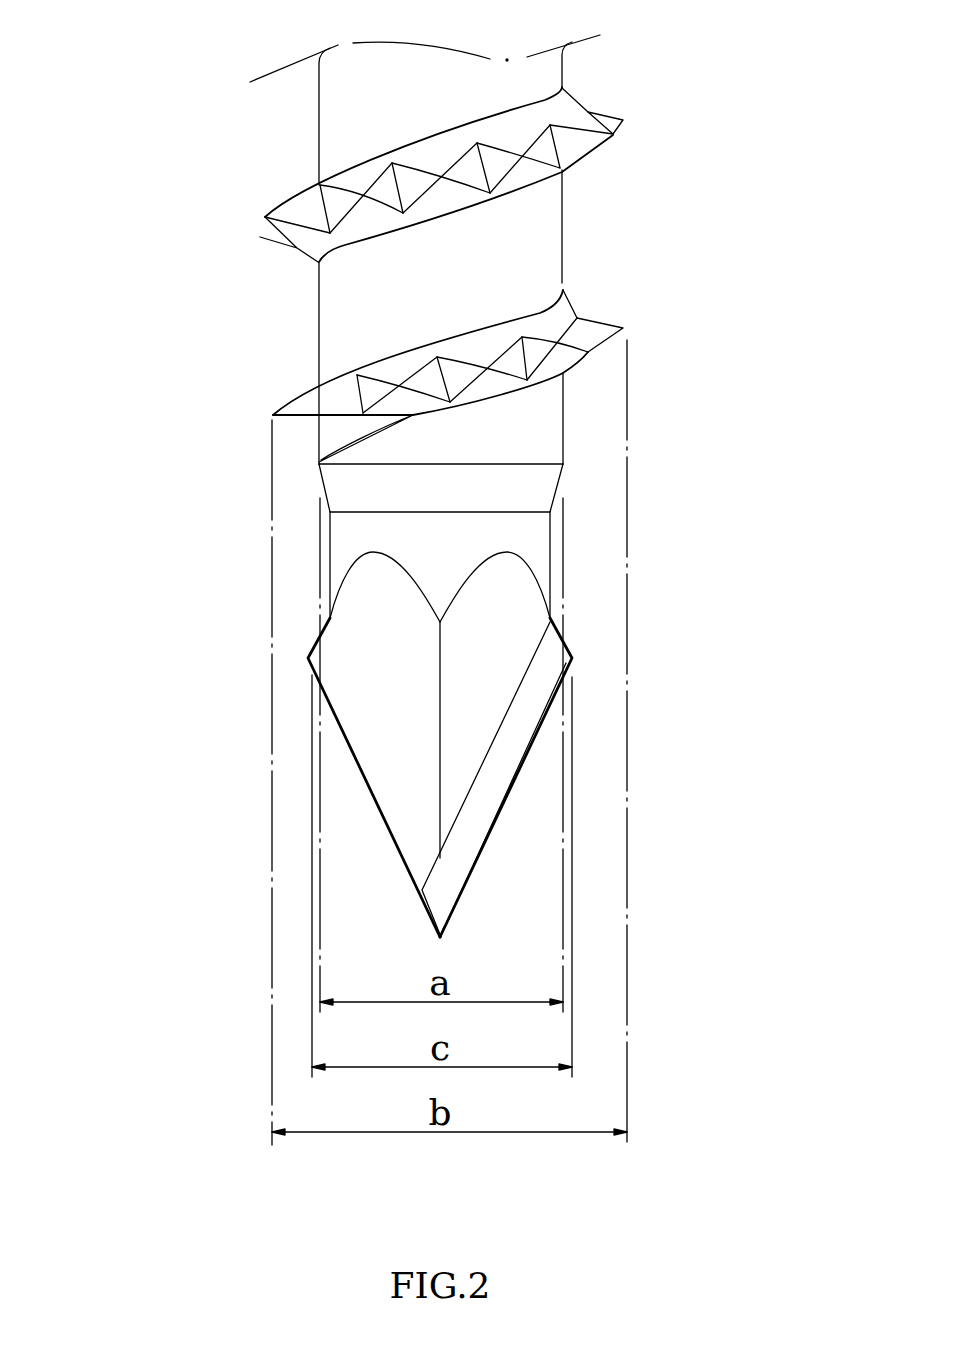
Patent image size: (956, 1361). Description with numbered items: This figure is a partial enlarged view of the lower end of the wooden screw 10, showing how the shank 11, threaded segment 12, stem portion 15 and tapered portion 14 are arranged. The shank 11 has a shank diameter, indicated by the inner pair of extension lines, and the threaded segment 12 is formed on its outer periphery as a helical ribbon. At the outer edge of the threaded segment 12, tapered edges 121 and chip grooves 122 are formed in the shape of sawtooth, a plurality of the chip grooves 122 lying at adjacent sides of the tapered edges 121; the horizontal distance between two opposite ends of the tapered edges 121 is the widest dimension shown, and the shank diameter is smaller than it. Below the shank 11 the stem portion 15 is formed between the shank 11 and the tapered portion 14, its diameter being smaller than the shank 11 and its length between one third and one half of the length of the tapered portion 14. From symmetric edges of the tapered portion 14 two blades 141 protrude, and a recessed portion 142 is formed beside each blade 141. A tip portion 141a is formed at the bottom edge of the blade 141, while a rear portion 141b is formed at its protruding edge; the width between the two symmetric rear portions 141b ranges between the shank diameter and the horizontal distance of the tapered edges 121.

The wooden screw 10 is at (436, 511).
The shank 11 is at (362, 112).
The threaded segment 12 is at (447, 167).
The tapered edges 121 is at (260, 237).
The chip grooves 122 is at (553, 148).
The tapered portion 14 is at (483, 806).
The blade 141 is at (515, 783).
The tip portion 141a is at (440, 937).
The rear portion 141b is at (572, 658).
The recessed portion 142 is at (460, 822).
The stem portion 15 is at (548, 538).